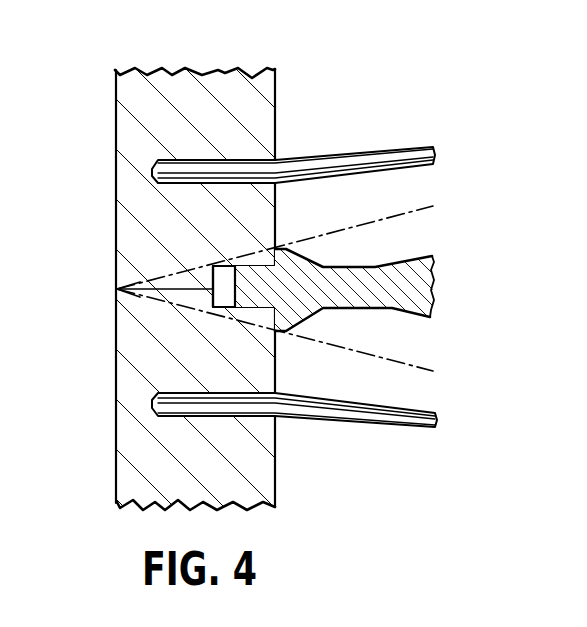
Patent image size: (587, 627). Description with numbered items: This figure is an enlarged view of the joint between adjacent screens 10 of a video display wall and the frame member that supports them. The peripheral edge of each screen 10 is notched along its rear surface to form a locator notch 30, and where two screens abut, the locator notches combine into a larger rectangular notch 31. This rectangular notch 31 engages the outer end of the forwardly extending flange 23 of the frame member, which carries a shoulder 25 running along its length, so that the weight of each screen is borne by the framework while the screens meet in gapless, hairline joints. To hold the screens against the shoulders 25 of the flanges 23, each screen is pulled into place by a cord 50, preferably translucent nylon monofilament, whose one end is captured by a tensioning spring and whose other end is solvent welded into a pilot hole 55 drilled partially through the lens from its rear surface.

The screen 10 is at (275, 120).
The flange 23 is at (374, 274).
The shoulder 25 is at (311, 259).
The locator notch 30 is at (221, 266).
The rectangular notch 31 is at (213, 300).
The cord 50 is at (262, 255).
The pilot hole 55 is at (200, 158).